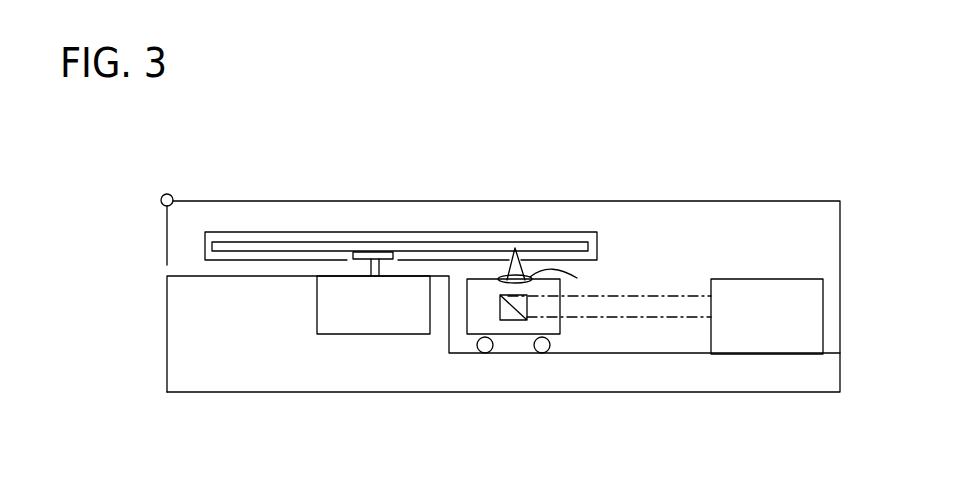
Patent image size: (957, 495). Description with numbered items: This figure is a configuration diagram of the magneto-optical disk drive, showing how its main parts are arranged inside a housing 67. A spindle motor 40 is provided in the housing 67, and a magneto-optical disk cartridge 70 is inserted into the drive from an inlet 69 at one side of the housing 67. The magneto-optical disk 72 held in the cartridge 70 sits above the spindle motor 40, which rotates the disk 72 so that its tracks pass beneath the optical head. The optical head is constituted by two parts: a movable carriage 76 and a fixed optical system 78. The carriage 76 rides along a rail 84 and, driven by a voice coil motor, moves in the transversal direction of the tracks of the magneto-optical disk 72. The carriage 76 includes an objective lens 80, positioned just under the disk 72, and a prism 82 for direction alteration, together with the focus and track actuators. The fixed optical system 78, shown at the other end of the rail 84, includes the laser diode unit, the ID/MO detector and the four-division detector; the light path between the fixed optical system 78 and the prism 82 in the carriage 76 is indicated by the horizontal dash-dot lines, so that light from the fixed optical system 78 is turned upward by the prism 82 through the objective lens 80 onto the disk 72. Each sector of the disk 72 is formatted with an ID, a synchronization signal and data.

The housing 67 is at (722, 201).
The inlet 69 is at (165, 246).
The magneto-optical disk cartridge 70 is at (282, 232).
The magneto-optical disk 72 is at (518, 250).
The carriage 76 is at (518, 337).
The fixed optical system 78 is at (795, 279).
The objective lens 80 is at (575, 277).
The prism 82 is at (498, 312).
The rail 84 is at (602, 354).
The spindle motor 40 is at (405, 335).